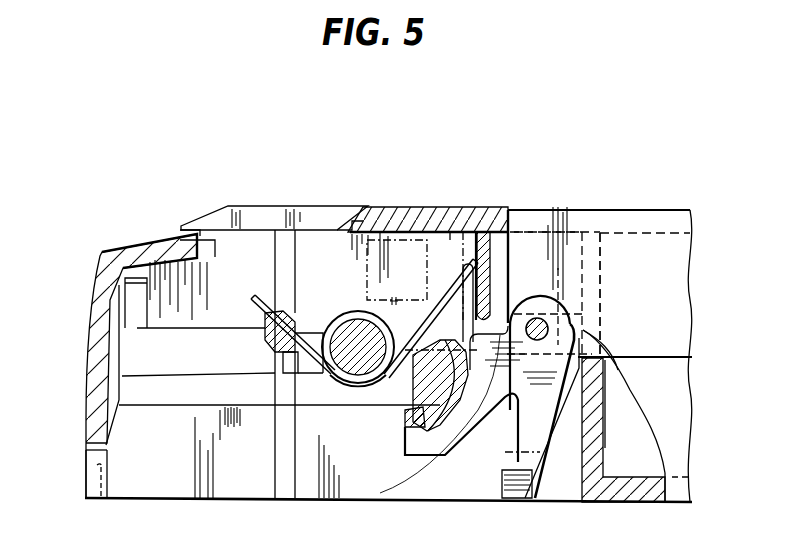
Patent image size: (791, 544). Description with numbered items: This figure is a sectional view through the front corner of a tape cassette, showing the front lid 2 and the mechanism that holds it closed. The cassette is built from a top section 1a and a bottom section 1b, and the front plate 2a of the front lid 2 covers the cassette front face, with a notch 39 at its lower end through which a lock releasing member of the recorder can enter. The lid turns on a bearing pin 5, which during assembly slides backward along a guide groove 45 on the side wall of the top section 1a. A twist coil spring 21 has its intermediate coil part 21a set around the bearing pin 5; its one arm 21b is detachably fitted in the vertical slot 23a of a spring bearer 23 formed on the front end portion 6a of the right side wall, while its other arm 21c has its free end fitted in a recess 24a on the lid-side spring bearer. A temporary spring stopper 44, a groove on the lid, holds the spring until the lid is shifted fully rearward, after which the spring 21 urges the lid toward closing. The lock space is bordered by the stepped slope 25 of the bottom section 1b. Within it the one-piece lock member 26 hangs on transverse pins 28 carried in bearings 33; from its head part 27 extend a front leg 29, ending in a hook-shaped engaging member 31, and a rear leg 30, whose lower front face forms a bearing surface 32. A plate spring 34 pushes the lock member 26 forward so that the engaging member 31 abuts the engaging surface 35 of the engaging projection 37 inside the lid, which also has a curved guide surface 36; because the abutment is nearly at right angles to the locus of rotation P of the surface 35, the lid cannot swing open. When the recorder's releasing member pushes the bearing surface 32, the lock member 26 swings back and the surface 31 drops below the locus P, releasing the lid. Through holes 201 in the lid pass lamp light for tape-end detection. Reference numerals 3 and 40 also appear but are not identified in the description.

The top section 1a is at (676, 276).
The bottom section 1b is at (680, 445).
The front lid 2 is at (97, 277).
The front plate 2a is at (86, 363).
The base plate 3 is at (279, 474).
The bearing pin 5 is at (332, 373).
The front end portion of right side wall 6a is at (183, 272).
The twist coil spring 21 is at (353, 314).
The intermediate coil part 21a is at (320, 309).
The one arm of twist coil spring 21b is at (462, 267).
The other arm of twist coil spring 21c is at (256, 296).
The spring bearer 23 is at (467, 232).
The vertical slot 23a is at (452, 222).
The recess 24a is at (268, 310).
The stepped slope 25 is at (278, 252).
The lock member 26 is at (515, 279).
The head part 27 is at (583, 330).
The transverse pins 28 is at (538, 300).
The front leg 29 is at (470, 408).
The rear leg 30 is at (527, 465).
The engaging member 31 is at (408, 416).
The bearing surface 32 is at (503, 485).
The bearings 33 is at (533, 292).
The plate spring 34 is at (562, 420).
The engaging surface 35 is at (425, 428).
The curved guide surface 36 is at (447, 441).
The engaging projection 37 is at (412, 404).
The notch 39 is at (85, 478).
The cover plate 40 is at (294, 216).
The temporary spring stopper 44 is at (437, 370).
The guide grooves 45 is at (178, 362).
The through holes 201 is at (372, 240).
The locus of rotation P is at (354, 478).